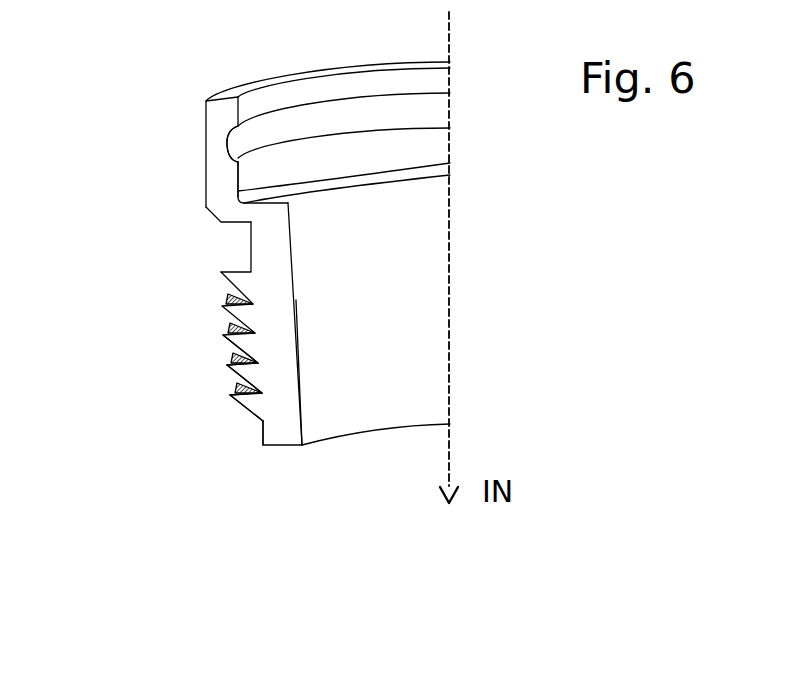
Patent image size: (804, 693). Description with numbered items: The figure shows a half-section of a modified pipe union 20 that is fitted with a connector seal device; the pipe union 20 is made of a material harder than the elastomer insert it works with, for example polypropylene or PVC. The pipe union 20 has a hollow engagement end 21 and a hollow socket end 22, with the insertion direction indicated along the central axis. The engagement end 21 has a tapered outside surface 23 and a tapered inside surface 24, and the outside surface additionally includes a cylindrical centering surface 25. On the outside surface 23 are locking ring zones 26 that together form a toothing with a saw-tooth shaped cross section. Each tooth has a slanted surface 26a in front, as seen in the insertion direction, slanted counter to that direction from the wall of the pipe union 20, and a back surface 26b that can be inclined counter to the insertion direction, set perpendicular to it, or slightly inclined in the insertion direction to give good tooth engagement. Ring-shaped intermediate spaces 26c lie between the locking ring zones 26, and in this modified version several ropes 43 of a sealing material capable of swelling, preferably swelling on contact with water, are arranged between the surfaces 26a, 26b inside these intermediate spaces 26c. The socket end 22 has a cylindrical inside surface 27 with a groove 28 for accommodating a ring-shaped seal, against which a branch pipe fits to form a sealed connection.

The pipe union 20 is at (220, 62).
The engagement end 21 is at (275, 428).
The socket end 22 is at (215, 179).
The tapered outside surface 23 is at (262, 432).
The tapered inside surface 24 is at (302, 416).
The cylindrical centering surface 25 is at (248, 242).
The locking ring zones 26 is at (170, 305).
The slanted surfaces 26a is at (245, 410).
The back surfaces 26b is at (229, 395).
The ring-shaped intermediate spaces 26c is at (226, 362).
The cylindrical inside surface 27 is at (238, 178).
The groove 28 is at (263, 115).
The ropes of sealing material capable of swelling 43 is at (257, 332).